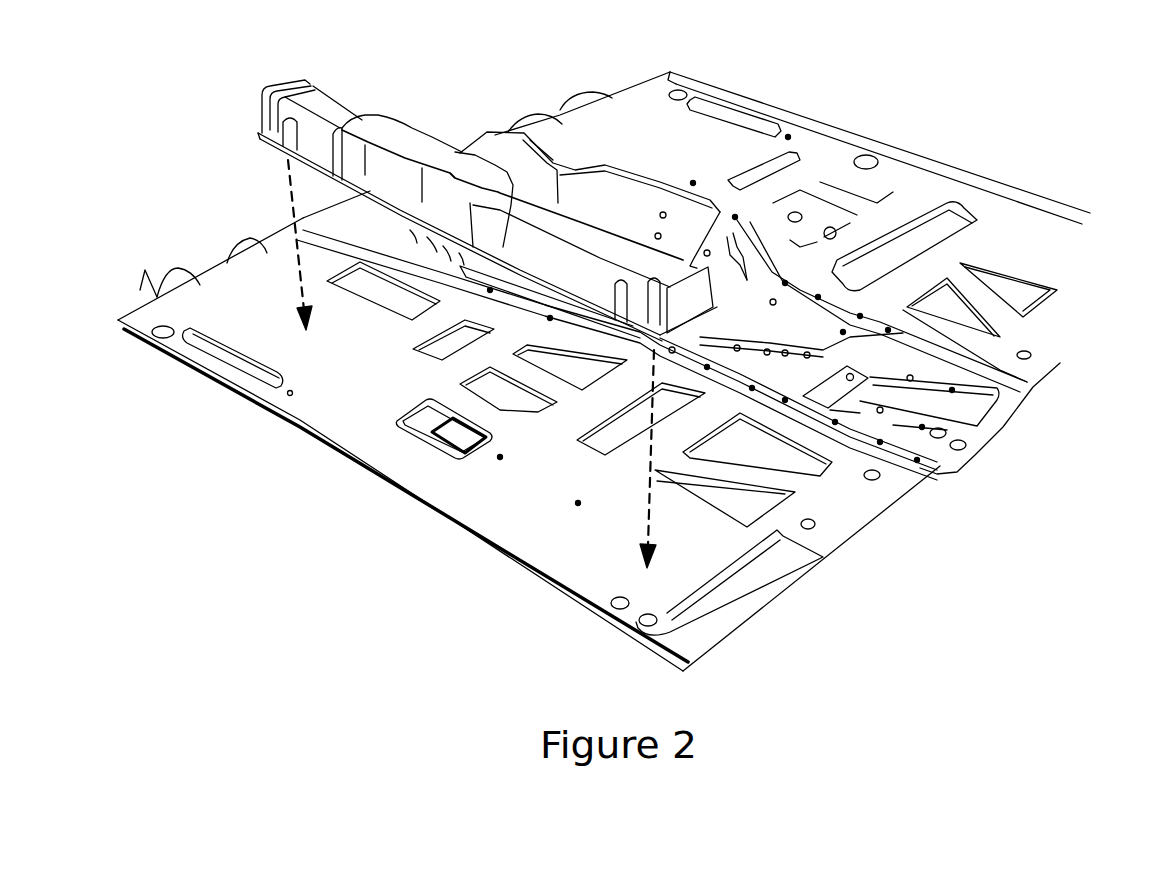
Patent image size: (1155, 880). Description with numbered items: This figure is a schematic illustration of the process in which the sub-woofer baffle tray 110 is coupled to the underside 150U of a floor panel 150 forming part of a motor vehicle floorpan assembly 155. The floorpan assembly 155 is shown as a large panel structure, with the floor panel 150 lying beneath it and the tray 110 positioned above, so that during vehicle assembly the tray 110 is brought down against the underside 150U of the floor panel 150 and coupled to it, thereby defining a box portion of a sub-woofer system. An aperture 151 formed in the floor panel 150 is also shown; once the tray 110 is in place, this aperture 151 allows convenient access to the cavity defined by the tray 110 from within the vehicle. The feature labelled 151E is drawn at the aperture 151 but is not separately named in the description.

The sub-woofer baffle tray 110 is at (325, 105).
The floor panel 150 is at (827, 540).
The underside of floor panel 150U is at (853, 503).
The aperture 151 is at (453, 433).
The edge of opening 151E is at (447, 452).
The floorpan assembly 155 is at (1010, 223).